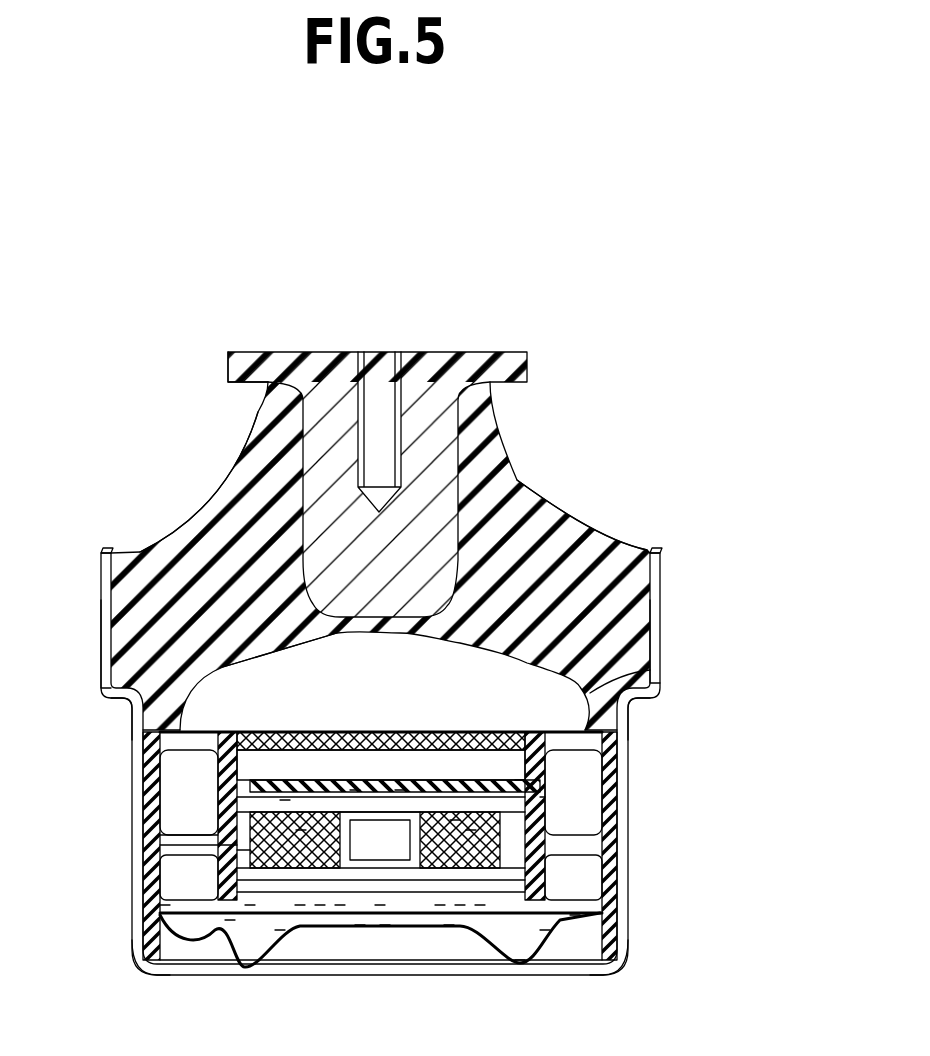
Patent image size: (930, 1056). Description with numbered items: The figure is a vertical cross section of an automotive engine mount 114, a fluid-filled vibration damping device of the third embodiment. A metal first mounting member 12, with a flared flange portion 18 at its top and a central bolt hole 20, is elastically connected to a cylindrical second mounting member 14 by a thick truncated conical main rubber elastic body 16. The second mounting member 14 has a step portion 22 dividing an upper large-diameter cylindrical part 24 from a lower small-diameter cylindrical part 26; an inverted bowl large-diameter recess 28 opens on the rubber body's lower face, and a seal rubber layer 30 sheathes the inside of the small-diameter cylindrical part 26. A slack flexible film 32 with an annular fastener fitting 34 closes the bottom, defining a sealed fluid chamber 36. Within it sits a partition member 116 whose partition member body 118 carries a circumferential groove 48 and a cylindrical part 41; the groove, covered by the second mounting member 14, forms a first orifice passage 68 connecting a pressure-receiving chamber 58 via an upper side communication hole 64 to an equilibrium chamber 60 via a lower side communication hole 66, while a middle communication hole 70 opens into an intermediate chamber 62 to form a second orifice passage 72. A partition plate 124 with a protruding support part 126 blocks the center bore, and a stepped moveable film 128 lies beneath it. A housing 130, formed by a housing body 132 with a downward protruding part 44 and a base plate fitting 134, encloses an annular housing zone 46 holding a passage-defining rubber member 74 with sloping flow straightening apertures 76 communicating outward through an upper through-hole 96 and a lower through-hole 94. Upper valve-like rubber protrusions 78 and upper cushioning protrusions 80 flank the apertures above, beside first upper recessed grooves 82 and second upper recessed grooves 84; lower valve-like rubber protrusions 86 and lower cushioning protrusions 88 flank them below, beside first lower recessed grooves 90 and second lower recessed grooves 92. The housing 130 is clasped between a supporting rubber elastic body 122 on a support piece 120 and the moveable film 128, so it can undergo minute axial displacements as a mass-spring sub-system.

The first mounting member 12 is at (442, 343).
The second mounting member 14 is at (97, 664).
The main rubber elastic body 16 is at (512, 515).
The flange portion 18 is at (243, 363).
The bolt hole 20 is at (377, 388).
The step portion 22 is at (128, 707).
The large-diameter cylindrical part 24 is at (100, 636).
The small-diameter cylindrical part 26 is at (622, 730).
The large-diameter recess 28 is at (598, 542).
The seal rubber layer 30 is at (145, 957).
The flexible film 32 is at (255, 966).
The fastener fitting 34 is at (610, 937).
The fluid chamber 36 is at (310, 655).
The cylindrical part 41 is at (640, 672).
The protruding part 44 is at (360, 925).
The housing zone 46 is at (386, 925).
The circumferential groove 48 is at (520, 830).
The pressure-receiving chamber 58 is at (380, 672).
The equilibrium chamber 60 is at (262, 952).
The intermediate chamber 62 is at (380, 772).
The upper side communication hole 64 is at (160, 750).
The lower side communication hole 66 is at (160, 905).
The first orifice passage 68 is at (160, 828).
The middle communication hole 70 is at (605, 748).
The second orifice passage 72 is at (520, 780).
The passage-defining rubber member 74 is at (605, 878).
The flow straightening apertures 76 is at (300, 905).
The upper valve-like rubber protrusions 78 is at (300, 830).
The upper cushioning protrusions 80 is at (285, 800).
The first upper recessed grooves 82 is at (567, 800).
The second upper recessed grooves 84 is at (255, 843).
The lower valve-like rubber protrusions 86 is at (250, 905).
The lower cushioning protrusions 88 is at (320, 905).
The first lower recessed grooves 90 is at (165, 930).
The second lower recessed grooves 92 is at (340, 905).
The lower through-hole 94 is at (280, 930).
The upper through-hole 96 is at (400, 805).
The engine mount 114 is at (618, 424).
The partition member 116 is at (248, 712).
The partition member body 118 is at (575, 916).
The support piece 120 is at (520, 962).
The supporting rubber elastic body 122 is at (230, 920).
The partition plate 124 is at (355, 790).
The protruding support part 126 is at (160, 778).
The moveable film 128 is at (400, 790).
The housing 130 is at (560, 856).
The housing body 132 is at (165, 880).
The base plate fitting 134 is at (380, 905).